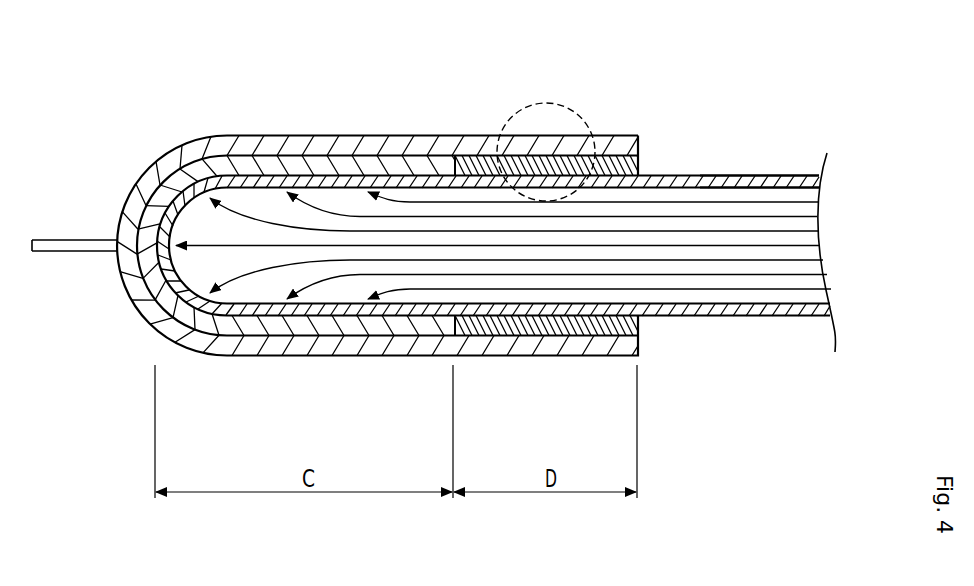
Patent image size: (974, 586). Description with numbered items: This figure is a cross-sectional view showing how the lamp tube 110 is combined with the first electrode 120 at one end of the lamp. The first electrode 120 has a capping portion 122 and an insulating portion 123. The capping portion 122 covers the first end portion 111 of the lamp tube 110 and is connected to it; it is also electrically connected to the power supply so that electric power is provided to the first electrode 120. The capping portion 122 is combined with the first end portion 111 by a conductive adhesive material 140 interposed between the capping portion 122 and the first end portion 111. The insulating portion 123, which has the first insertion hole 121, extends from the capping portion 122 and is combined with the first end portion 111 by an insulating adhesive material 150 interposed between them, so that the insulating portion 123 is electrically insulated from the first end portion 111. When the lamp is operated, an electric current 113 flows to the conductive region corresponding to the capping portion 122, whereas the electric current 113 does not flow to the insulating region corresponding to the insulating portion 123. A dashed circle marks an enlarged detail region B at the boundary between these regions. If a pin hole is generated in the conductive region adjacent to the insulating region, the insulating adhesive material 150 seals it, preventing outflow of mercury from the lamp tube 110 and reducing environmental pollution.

The lamp tube 110 is at (731, 172).
The first end portion 111 is at (784, 173).
The electric current 113 is at (851, 303).
The first electrode 120 is at (163, 148).
The first insertion hole 121 is at (643, 173).
The capping portion 122 is at (355, 147).
The insulating portion 123 is at (601, 160).
The conductive adhesive material 140 is at (352, 322).
The insulating adhesive material 150 is at (550, 322).
The region B is at (517, 108).